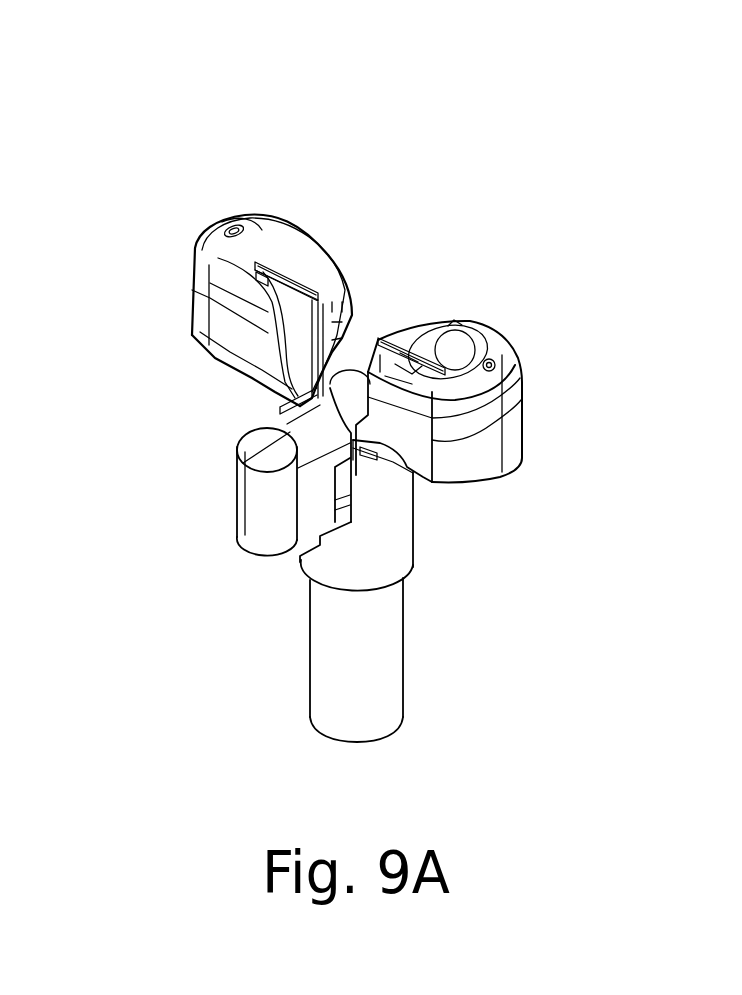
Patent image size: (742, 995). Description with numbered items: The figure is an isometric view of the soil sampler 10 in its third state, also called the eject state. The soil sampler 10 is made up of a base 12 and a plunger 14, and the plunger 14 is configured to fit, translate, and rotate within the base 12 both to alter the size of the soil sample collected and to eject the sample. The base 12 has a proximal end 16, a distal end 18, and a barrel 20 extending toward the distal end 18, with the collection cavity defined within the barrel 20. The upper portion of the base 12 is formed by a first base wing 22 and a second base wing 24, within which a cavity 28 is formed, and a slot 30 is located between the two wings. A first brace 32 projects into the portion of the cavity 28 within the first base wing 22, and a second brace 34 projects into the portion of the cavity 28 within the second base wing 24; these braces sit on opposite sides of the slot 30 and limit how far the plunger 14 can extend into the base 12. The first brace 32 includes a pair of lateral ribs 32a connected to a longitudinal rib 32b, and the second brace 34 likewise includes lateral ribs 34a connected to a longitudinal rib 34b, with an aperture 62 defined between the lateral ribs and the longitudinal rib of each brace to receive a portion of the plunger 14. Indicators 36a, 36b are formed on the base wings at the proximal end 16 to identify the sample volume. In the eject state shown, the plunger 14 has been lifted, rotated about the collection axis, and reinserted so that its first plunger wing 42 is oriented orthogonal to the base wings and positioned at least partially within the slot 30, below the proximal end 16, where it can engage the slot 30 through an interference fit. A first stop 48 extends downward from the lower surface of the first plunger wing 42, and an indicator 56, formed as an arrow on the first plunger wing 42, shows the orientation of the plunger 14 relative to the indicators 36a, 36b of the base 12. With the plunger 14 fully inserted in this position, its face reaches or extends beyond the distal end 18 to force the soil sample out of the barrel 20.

The soil sampler 10 is at (448, 197).
The base 12 is at (390, 522).
The plunger 14 is at (258, 422).
The proximal end 16 is at (508, 367).
The distal end 18 is at (333, 740).
The barrel 20 is at (380, 628).
The first base wing 22 is at (515, 407).
The second base wing 24 is at (203, 250).
The cavity 28 is at (453, 343).
The slot 30 is at (355, 502).
The first brace 32 is at (410, 370).
The lateral ribs 32a is at (520, 425).
The longitudinal rib 32b is at (420, 350).
The second brace 34 is at (272, 256).
The lateral ribs 34a is at (280, 273).
The longitudinal rib 34b is at (300, 287).
The indicator 36a is at (493, 367).
The indicator 36b is at (228, 218).
The first plunger wing 42 is at (243, 440).
The first stop 48 is at (304, 538).
The indicator 56 is at (243, 463).
The aperture 62 is at (252, 228).